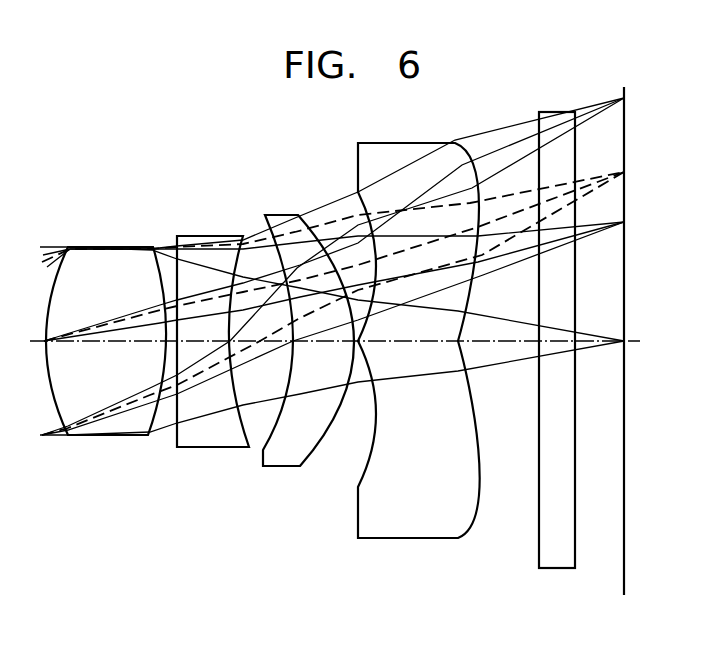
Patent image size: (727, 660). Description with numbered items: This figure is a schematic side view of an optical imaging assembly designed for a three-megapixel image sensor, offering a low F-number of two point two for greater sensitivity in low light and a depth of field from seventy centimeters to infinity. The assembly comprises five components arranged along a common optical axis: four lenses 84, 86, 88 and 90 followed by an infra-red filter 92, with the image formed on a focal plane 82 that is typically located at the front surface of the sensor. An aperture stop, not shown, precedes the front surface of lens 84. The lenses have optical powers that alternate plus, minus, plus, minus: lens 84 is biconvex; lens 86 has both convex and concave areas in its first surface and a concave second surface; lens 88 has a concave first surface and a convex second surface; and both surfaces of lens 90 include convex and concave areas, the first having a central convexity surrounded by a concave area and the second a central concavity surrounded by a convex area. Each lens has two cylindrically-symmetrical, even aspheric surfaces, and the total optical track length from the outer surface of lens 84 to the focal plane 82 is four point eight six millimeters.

The focal plane 82 is at (625, 537).
The lens 84 is at (90, 437).
The lens 86 is at (213, 447).
The lens 88 is at (288, 467).
The lens 90 is at (400, 538).
The infra-red filter 92 is at (556, 568).